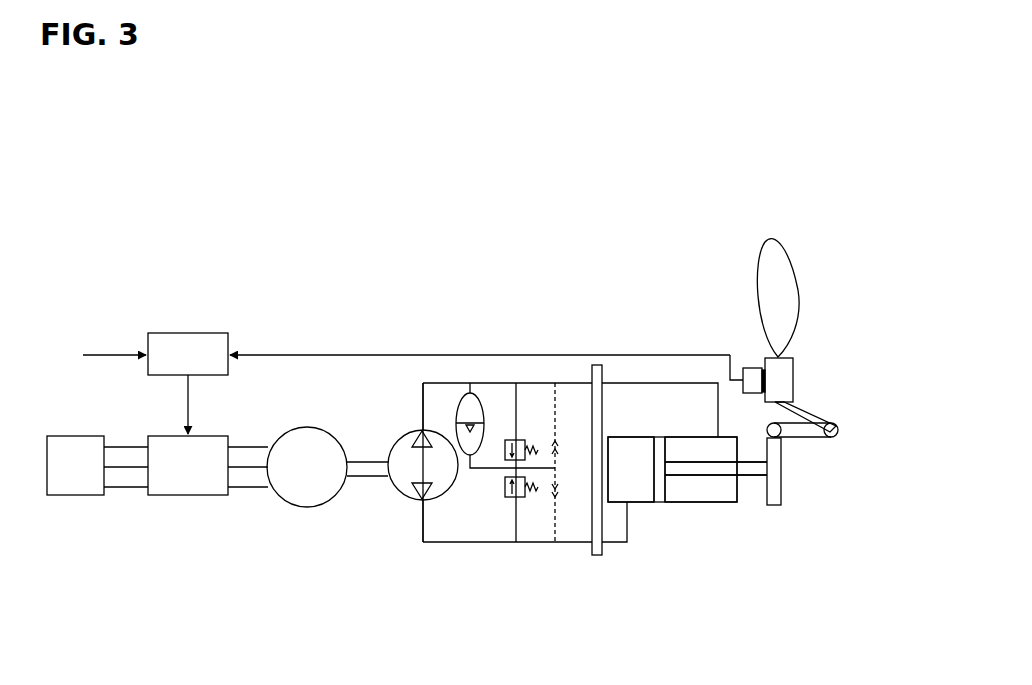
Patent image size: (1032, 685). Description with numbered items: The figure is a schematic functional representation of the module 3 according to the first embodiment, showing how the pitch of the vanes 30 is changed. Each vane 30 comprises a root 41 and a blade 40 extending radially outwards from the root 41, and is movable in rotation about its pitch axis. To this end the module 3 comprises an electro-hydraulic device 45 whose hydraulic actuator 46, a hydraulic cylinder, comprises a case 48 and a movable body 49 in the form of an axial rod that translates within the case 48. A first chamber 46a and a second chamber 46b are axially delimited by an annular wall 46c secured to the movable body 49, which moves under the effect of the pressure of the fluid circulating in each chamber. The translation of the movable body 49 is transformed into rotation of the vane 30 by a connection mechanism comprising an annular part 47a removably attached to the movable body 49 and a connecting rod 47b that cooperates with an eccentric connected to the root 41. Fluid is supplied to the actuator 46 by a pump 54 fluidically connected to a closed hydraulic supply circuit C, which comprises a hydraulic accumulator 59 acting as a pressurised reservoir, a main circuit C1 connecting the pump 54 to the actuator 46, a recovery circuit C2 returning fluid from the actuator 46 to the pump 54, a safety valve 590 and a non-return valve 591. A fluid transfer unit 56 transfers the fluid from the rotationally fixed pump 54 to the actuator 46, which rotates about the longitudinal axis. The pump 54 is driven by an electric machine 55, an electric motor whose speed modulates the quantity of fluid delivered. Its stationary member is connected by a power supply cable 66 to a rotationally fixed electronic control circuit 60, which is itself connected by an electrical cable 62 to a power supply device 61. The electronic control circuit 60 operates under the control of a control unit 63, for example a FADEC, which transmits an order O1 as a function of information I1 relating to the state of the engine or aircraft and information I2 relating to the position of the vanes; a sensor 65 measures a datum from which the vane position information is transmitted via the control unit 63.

The module 3 is at (849, 342).
The vane 30 is at (805, 249).
The blade 40 is at (780, 307).
The root 41 is at (787, 383).
The device for changing the pitch 45 is at (463, 598).
The hydraulic actuator 46 is at (679, 514).
The first chamber 46a is at (625, 490).
The second chamber 46b is at (708, 493).
The annular wall 46c is at (643, 462).
The annular part 47a is at (780, 455).
The connecting rod 47b is at (823, 422).
The case 48 is at (682, 437).
The movable body 49 is at (743, 470).
The pump 54 is at (405, 487).
The electric machine 55 is at (317, 498).
The fluid transfer unit 56 is at (597, 557).
The hydraulic accumulator 59 is at (465, 405).
The safety valve 590 is at (513, 452).
The non-return valve 591 is at (553, 500).
The electronic control circuit 60 is at (188, 495).
The power supply device 61 is at (73, 497).
The electrical cable 62 is at (127, 488).
The control unit 63 is at (187, 332).
The sensor 65 is at (752, 368).
The power supply cable 66 is at (247, 445).
The hydraulic supply circuit C is at (438, 545).
The main circuit C1 is at (516, 442).
The recovery circuit C2 is at (523, 542).
The information I1 is at (257, 354).
The information I2 is at (95, 353).
The order O1 is at (187, 400).